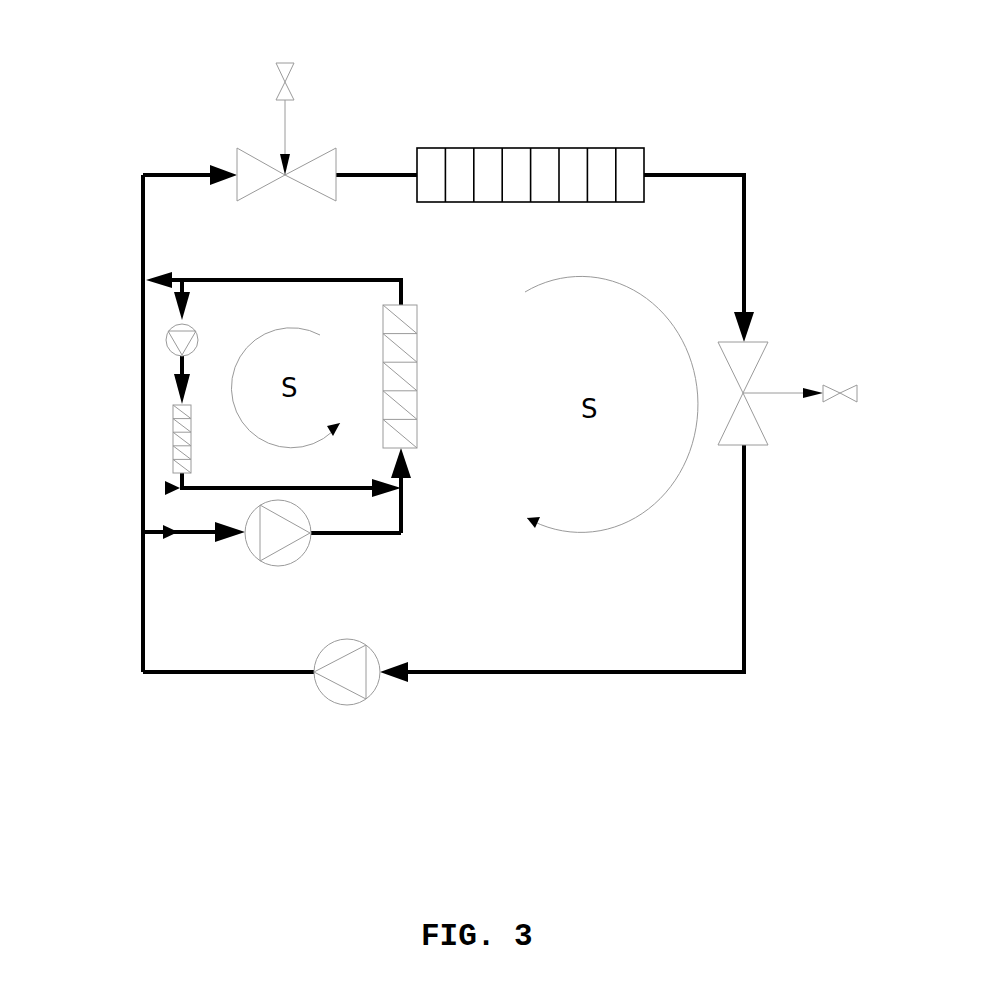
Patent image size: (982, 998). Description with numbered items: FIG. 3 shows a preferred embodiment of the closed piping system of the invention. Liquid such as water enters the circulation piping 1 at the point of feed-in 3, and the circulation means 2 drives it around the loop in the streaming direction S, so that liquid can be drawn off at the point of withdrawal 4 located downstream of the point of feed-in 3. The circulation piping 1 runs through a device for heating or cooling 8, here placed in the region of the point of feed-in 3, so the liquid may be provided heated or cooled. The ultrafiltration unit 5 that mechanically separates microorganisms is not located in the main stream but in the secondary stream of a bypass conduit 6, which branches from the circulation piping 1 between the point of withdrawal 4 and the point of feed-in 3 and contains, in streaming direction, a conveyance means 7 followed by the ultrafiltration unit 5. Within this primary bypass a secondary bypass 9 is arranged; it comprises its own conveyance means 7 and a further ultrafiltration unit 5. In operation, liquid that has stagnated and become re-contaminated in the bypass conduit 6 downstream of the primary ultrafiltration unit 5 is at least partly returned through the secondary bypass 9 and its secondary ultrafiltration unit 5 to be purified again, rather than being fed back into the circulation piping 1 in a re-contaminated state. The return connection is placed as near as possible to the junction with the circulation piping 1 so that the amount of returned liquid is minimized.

The circulation piping 1 is at (767, 204).
The circulation means 2 is at (368, 698).
The point of feed-in 3 is at (302, 158).
The point of withdrawal 4 is at (745, 392).
The ultrafiltration unit 5 is at (175, 467).
The bypass conduit 6 is at (165, 535).
The conveyance means 7 is at (166, 338).
The device for heating or cooling 8 is at (580, 150).
The secondary bypass 9 is at (175, 489).